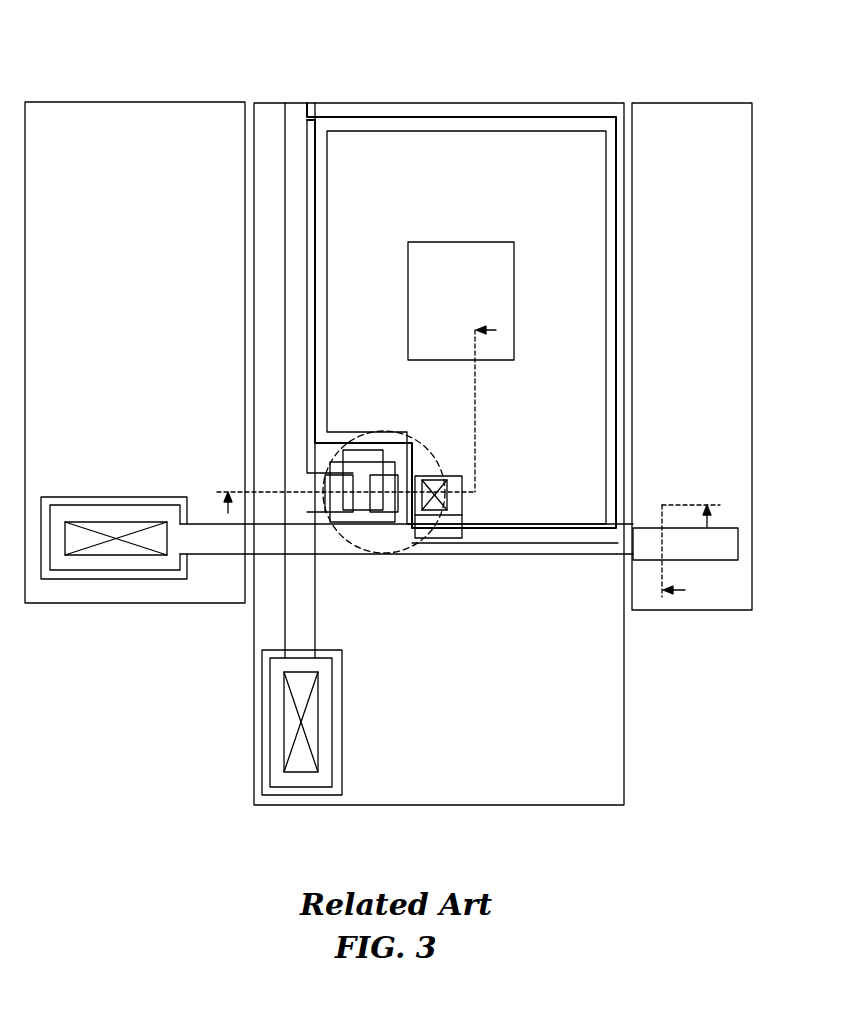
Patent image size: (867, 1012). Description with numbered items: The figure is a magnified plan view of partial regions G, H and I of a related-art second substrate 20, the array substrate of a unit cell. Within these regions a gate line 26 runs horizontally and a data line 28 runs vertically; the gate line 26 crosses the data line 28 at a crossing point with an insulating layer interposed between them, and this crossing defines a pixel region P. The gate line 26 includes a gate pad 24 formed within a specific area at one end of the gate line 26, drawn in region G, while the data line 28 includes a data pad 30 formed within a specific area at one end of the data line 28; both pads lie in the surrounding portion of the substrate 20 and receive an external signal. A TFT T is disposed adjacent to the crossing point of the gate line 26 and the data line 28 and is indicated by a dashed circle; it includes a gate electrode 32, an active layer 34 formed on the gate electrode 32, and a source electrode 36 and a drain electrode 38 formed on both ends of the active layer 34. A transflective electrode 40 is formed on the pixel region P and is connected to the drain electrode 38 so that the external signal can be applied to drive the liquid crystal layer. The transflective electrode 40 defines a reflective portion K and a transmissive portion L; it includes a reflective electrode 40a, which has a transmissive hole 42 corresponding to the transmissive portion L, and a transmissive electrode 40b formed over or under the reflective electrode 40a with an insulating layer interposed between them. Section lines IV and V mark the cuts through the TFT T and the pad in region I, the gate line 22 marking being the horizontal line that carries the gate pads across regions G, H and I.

The second substrate 20 is at (607, 71).
The gate line 22 is at (570, 558).
The gate pad 24 is at (63, 505).
The gate line 26 is at (723, 553).
The data line 28 is at (284, 300).
The data pad 30 is at (342, 723).
The gate electrode 32 is at (372, 450).
The active layer 34 is at (352, 512).
The source electrode 36 is at (372, 515).
The drain electrode 38 is at (448, 540).
The transflective electrode 40 is at (462, 276).
The reflective electrode 40a is at (496, 117).
The transmissive electrode 40b is at (525, 131).
The transmissive hole 42 is at (514, 253).
The pixel region P is at (352, 106).
The reflective portion K is at (400, 148).
The transmissive portion L is at (514, 296).
The TFT T is at (402, 553).
The partial region G is at (135, 603).
The partial region H is at (624, 735).
The partial region I is at (692, 610).
The section line IV- IV is at (360, 425).
The section line V- V is at (691, 553).